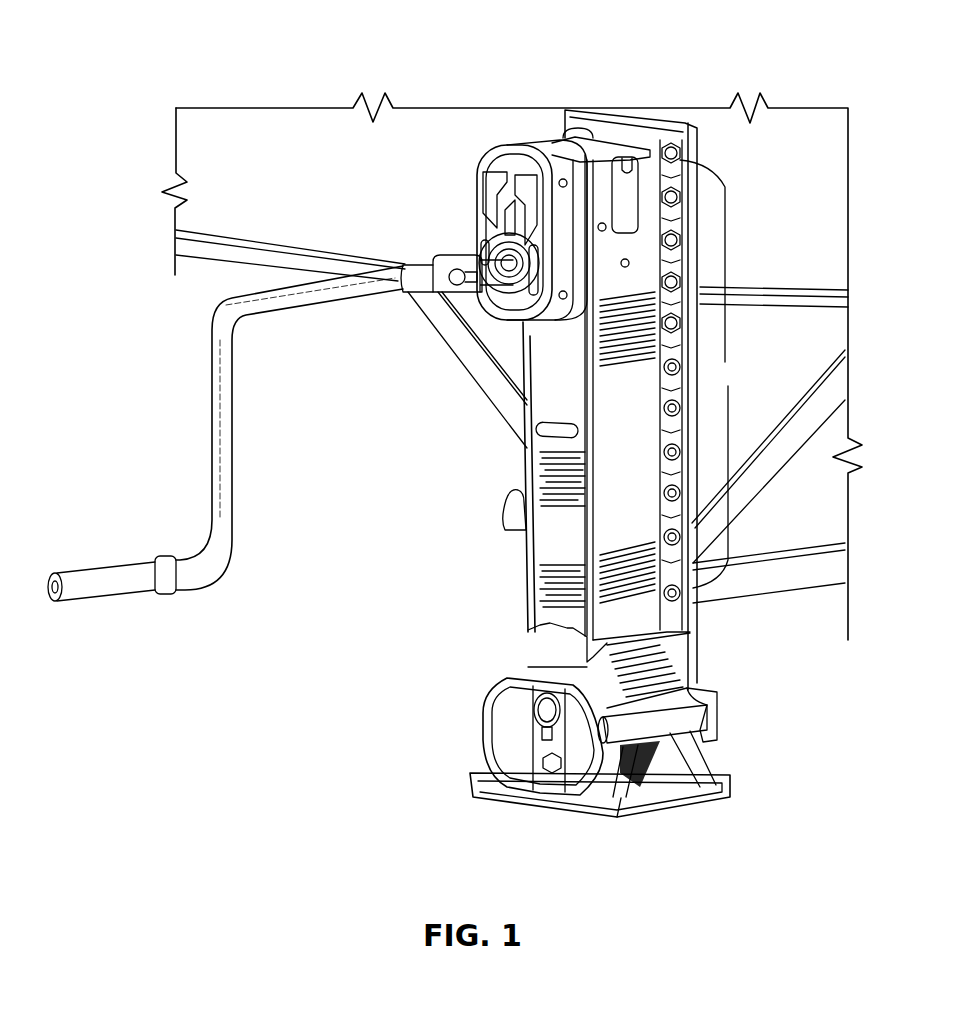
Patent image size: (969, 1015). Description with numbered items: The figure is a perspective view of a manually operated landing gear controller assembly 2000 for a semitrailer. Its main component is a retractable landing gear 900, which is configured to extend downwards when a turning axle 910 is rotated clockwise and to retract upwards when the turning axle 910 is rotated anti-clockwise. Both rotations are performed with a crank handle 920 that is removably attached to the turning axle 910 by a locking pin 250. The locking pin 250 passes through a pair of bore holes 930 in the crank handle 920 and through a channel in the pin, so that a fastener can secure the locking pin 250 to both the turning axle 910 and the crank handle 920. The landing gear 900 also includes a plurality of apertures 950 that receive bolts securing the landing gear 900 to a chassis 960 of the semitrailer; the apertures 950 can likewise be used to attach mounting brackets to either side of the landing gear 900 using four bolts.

The manually operated landing gear controller assembly 2000 is at (301, 86).
The chassis 960 is at (783, 258).
The plurality of apertures 950 is at (745, 374).
The retractable landing gear 900 is at (547, 548).
The turning axle 910 is at (513, 263).
The locking pin 250 is at (440, 262).
The crank handle 920 is at (222, 493).
The pair of bore holes 930 is at (473, 281).